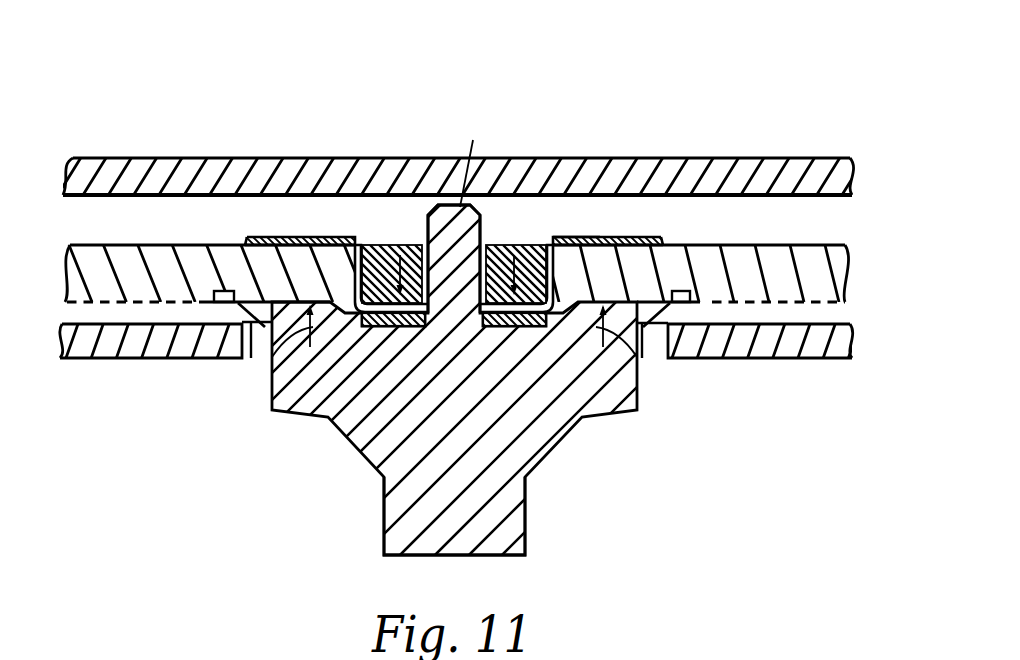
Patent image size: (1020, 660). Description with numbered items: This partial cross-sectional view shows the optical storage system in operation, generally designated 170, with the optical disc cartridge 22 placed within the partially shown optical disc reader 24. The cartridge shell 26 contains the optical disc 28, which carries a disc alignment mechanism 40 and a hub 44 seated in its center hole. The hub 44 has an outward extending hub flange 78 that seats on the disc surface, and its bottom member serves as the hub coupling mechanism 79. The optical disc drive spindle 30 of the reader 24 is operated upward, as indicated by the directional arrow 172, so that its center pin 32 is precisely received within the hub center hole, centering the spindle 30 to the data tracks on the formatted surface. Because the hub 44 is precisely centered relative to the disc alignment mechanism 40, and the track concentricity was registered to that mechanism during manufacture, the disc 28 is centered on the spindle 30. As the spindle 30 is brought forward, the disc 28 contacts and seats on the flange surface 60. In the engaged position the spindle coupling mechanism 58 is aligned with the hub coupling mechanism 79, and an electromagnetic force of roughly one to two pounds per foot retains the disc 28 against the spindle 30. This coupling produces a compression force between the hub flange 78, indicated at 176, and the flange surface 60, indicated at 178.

The fastener assembly 170 is at (218, 112).
The optical disc cartridge 22 is at (730, 143).
The optical disc 28 is at (808, 237).
The flange surface 60 is at (288, 300).
The hub 44 is at (502, 237).
The cartridge shell 26 is at (572, 240).
The hub flange 78 is at (597, 240).
The hub coupling mechanism 79 is at (374, 245).
The center pin 32 is at (426, 223).
The compression force at hub flange 176 is at (273, 202).
The optical disc reader 24 is at (332, 478).
The optical disc drive spindle 30 is at (547, 465).
The coupling mechanism 58 is at (367, 323).
The disc alignment mechanism 40 is at (252, 320).
The compression force at flange surface 178 is at (268, 298).
The directional arrow 172 is at (562, 595).